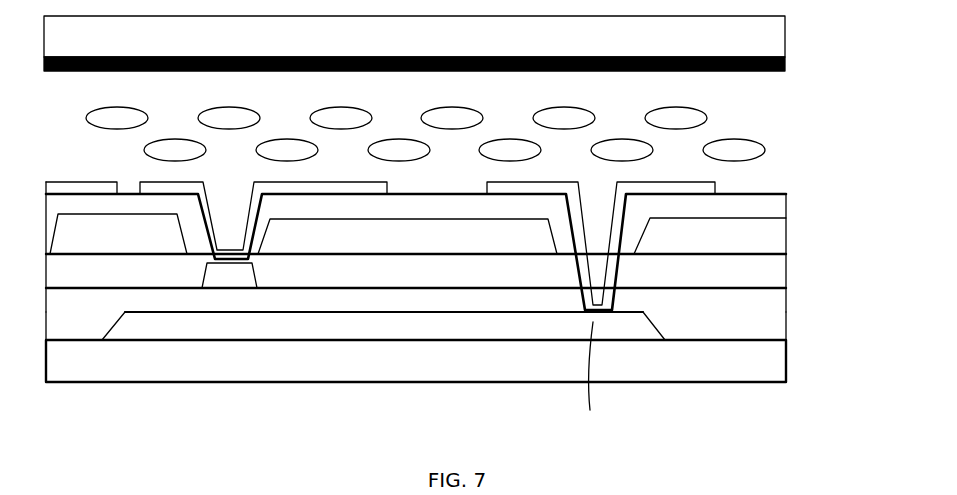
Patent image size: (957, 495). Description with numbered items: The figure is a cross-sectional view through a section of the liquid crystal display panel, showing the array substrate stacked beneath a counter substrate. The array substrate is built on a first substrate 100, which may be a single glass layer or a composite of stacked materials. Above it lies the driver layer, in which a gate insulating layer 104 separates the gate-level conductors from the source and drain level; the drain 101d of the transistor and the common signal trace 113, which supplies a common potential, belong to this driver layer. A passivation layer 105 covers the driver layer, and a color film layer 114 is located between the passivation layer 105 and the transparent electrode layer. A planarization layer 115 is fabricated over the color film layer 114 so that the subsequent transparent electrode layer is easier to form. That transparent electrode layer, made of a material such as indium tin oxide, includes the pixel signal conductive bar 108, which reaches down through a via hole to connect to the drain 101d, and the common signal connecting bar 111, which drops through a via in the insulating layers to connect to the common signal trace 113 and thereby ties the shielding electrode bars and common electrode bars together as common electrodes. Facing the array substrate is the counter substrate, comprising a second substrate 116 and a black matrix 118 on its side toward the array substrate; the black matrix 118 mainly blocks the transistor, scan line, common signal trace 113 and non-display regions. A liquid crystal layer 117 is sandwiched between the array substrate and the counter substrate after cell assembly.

The first substrate 100 is at (787, 355).
The gate insulating layer 104 is at (787, 305).
The passivation layer 105 is at (787, 272).
The drain 101d is at (230, 265).
The color film layer 114 is at (787, 237).
The planarization layer 115 is at (787, 195).
The pixel signal conductive bar 108 is at (315, 180).
The common signal connecting bar 111 is at (77, 181).
The common signal trace 113 is at (599, 380).
The second substrate 116 is at (787, 30).
The liquid crystal layer 117 is at (766, 150).
The black matrix 118 is at (787, 63).